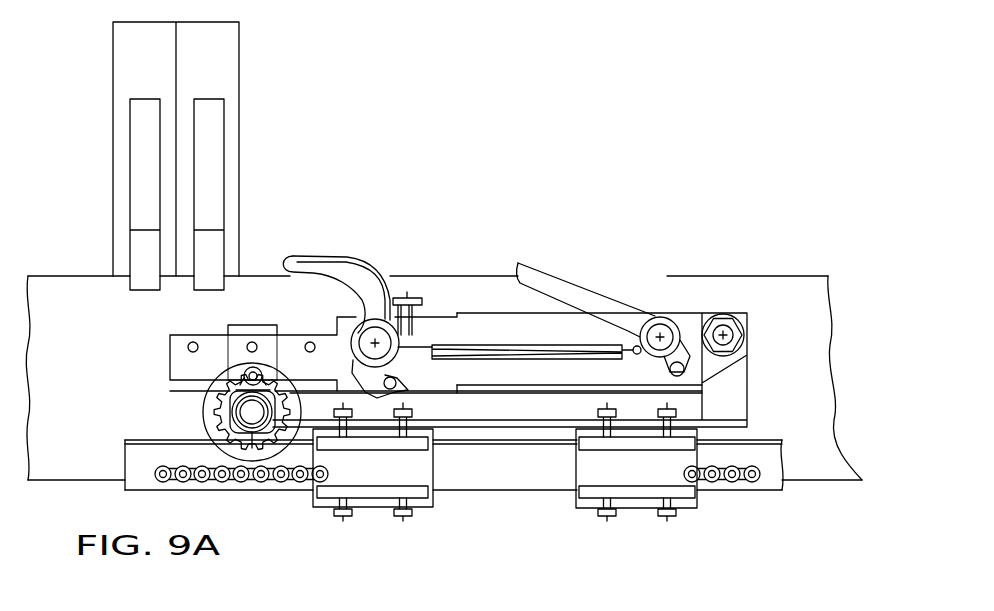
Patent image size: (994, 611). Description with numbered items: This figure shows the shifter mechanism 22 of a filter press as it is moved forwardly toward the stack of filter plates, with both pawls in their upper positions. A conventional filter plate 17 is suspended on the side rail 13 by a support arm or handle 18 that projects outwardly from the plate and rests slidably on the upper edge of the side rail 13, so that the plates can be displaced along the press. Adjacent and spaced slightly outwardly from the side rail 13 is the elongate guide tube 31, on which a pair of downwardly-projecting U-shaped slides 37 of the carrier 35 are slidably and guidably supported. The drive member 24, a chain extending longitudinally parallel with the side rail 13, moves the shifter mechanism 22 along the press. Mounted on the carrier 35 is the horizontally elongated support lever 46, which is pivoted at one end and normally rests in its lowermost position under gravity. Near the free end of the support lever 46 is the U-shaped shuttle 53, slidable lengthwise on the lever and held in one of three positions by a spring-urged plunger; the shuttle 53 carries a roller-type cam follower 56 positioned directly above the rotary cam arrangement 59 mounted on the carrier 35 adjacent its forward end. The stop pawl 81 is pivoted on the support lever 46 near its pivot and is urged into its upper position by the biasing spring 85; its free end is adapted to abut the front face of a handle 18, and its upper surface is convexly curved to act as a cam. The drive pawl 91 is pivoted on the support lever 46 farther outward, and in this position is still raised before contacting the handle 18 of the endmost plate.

The side rail 13 is at (778, 292).
The filter plate 17 is at (222, 70).
The support arm or handle 18 is at (214, 139).
The shifter mechanism 22 is at (485, 272).
The drive member (chain) 24 is at (727, 482).
The guide tube 31 is at (468, 485).
The carrier or housing 35 is at (557, 412).
The U-shaped slide 37 is at (370, 508).
The support member or support lever 46 is at (448, 330).
The follower member or shuttle 53 is at (265, 332).
The roller-type cam follower 56 is at (240, 370).
The rotary cam arrangement 59 is at (186, 396).
The stop member (stop pawl or lever) 81 is at (602, 297).
The biasing spring 85 is at (543, 357).
The driving member (drive pawl or lever) 91 is at (361, 273).